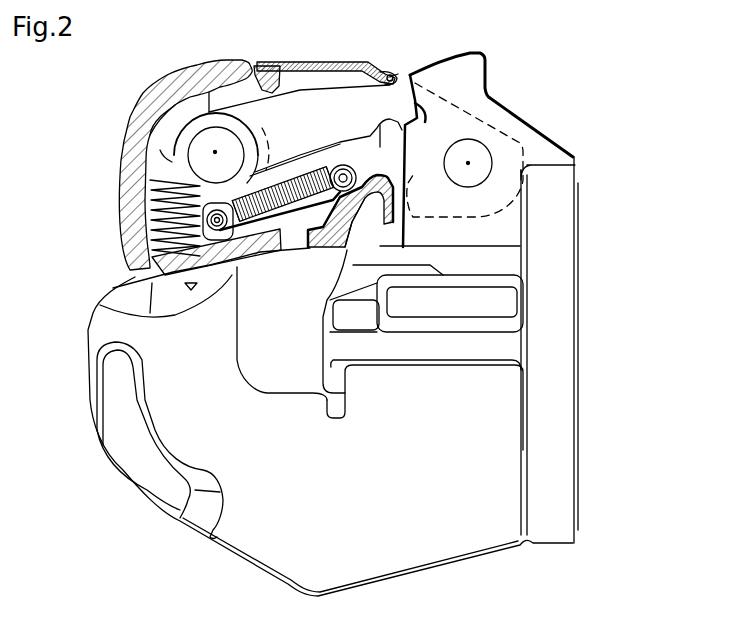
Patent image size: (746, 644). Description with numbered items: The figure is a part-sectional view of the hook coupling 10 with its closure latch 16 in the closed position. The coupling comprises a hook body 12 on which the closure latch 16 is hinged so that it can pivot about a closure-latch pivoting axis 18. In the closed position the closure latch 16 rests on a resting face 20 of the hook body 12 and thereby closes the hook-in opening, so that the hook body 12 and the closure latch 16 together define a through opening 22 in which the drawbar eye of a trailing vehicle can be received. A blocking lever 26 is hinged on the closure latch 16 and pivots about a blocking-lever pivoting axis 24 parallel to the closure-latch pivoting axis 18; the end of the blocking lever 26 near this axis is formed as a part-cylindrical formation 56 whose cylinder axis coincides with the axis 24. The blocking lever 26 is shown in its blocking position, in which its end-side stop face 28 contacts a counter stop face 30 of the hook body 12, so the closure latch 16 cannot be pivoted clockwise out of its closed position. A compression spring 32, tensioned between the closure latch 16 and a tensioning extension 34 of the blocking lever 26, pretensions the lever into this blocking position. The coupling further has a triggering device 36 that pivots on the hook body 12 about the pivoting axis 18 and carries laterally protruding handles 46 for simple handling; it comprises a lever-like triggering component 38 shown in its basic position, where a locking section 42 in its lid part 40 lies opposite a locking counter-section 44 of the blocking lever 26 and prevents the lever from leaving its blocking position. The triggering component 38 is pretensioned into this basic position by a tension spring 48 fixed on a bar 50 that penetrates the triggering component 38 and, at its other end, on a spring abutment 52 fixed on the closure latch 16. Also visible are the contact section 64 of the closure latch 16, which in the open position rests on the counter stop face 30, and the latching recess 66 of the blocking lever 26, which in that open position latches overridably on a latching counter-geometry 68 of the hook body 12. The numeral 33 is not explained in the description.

The hook coupling 10 is at (643, 324).
The hook body 12 is at (385, 492).
The closure latch 16 is at (143, 110).
The closure-latch pivoting axis 18 is at (468, 163).
The resting face 20 is at (165, 270).
The through opening 22 is at (292, 330).
The blocking-lever pivoting axis 24 is at (213, 150).
The blocking lever 26 is at (356, 126).
The end-side stop face 28 is at (465, 150).
The counter stop face 30 is at (407, 106).
The compression spring 32 is at (150, 216).
The stop 33 is at (381, 175).
The tensioning extension 34 is at (161, 160).
The triggering device 36 is at (326, 50).
The triggering component 38 is at (221, 148).
The lid part 40 is at (360, 63).
The locking section 42 is at (397, 75).
The locking counter-section 44 is at (390, 77).
The handles 46 is at (272, 65).
The tension spring 48 is at (282, 177).
The bar 50 is at (336, 170).
The spring abutment 52 is at (181, 170).
The part-cylindrical formation 56 is at (177, 127).
The contact section 64 is at (390, 172).
The latching recess 66 is at (393, 136).
The latching counter-geometry 68 is at (482, 55).